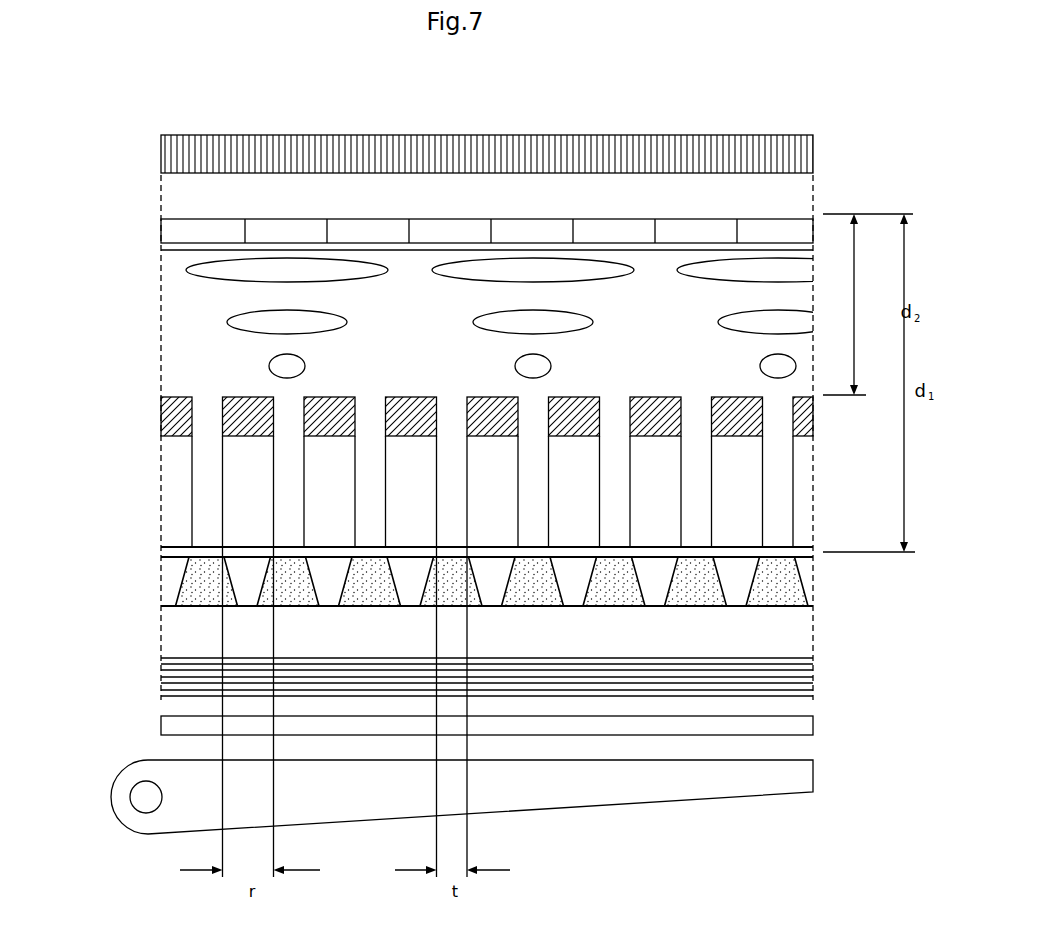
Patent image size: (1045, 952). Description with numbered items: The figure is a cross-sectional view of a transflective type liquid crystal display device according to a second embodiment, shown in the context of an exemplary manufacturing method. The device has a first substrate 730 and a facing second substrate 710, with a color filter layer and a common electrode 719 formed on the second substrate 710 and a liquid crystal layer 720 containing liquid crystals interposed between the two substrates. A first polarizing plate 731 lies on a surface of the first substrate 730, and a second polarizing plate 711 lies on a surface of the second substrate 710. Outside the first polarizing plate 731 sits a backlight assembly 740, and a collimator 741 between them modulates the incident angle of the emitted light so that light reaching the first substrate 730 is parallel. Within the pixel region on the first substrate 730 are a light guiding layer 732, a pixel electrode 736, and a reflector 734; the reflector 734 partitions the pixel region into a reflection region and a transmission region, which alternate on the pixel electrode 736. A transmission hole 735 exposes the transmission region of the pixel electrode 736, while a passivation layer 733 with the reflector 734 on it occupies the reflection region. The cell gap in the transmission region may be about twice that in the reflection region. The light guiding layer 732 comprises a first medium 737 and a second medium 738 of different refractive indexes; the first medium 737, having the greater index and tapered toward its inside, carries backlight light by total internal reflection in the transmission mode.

The second substrate 710 is at (803, 207).
The second polarizing plate 711 is at (803, 148).
The color filter layer and common electrode 719 is at (178, 245).
The liquid crystal layer 720 is at (150, 243).
The transmission hole 735 is at (203, 407).
The reflector 734 is at (240, 452).
The passivation layer 733 is at (237, 500).
The pixel electrode 736 is at (782, 547).
The light guiding layer 732 is at (810, 587).
The second medium 738 is at (245, 570).
The first medium 737 is at (205, 597).
The first substrate 730 is at (803, 632).
The first polarizing plate 731 is at (798, 673).
The collimator 741 is at (805, 720).
The backlight assembly 740 is at (100, 762).